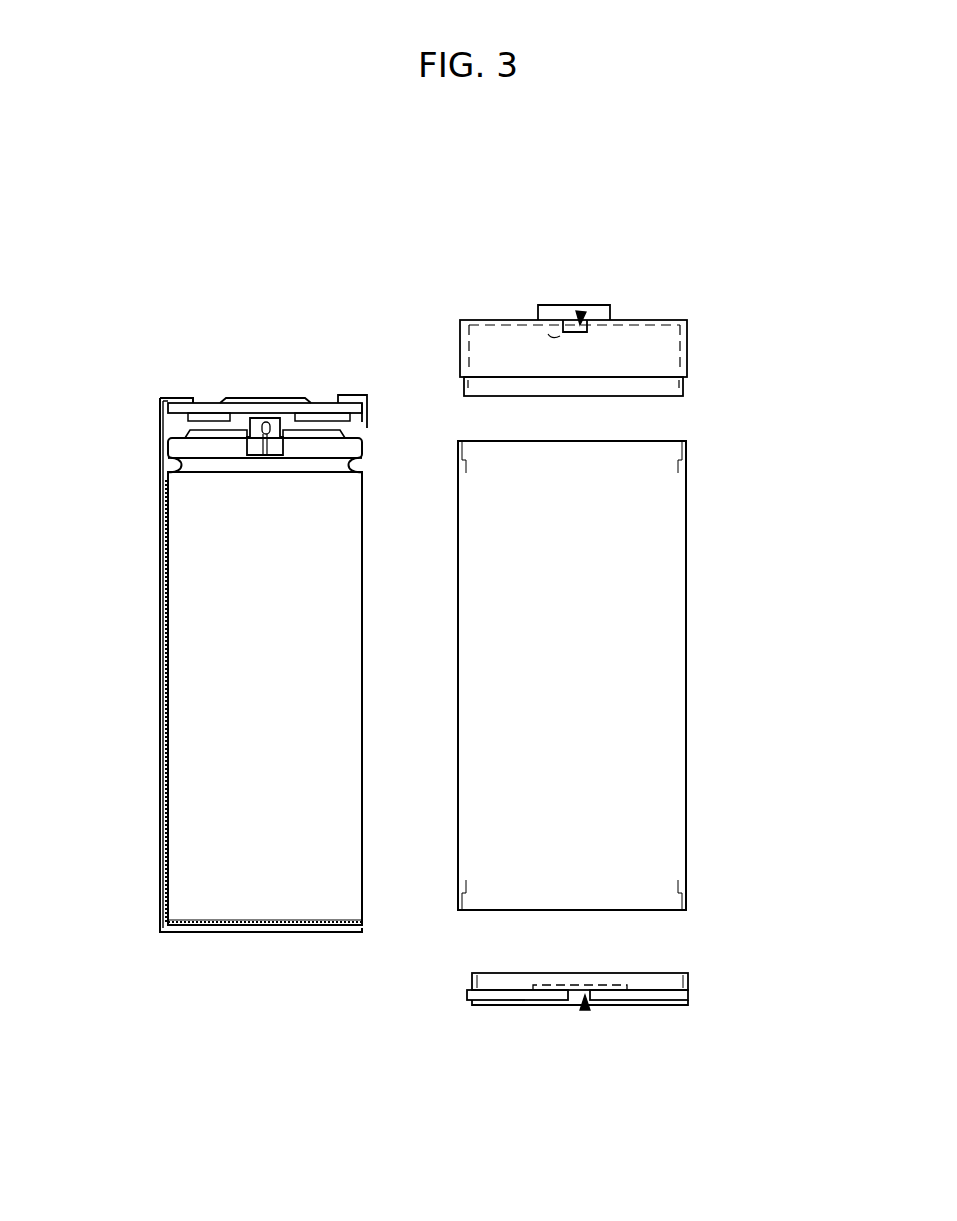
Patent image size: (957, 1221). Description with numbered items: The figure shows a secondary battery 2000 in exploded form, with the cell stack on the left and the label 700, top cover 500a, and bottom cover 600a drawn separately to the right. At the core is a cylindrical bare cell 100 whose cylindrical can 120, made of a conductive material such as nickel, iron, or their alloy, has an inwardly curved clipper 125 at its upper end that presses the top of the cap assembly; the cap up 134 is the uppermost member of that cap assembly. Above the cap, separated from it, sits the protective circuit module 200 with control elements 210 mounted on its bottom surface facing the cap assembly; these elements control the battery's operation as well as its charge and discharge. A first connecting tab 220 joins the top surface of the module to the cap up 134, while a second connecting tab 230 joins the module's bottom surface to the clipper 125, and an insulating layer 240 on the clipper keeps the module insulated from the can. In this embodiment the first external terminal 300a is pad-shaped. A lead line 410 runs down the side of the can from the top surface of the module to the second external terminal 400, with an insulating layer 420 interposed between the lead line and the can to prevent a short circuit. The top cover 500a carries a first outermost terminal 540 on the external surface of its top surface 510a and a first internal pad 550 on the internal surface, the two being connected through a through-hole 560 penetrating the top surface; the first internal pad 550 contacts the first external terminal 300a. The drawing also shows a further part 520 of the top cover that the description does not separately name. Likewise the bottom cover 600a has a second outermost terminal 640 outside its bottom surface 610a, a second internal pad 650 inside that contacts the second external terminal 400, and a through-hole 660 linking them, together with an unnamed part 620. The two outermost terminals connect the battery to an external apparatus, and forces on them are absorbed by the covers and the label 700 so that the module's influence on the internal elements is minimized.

The secondary battery 2000 is at (133, 246).
The cylindrical bare cell 100 is at (308, 668).
The cylindrical can 120 is at (363, 612).
The clipper 125 is at (363, 463).
The cap up 134 is at (208, 430).
The protective circuit module 200 is at (240, 398).
The control elements 210 is at (316, 410).
The first connecting tab 220 is at (353, 397).
The second connecting tab 230 is at (255, 415).
The insulating layer 240 is at (187, 438).
The first external terminal 300a is at (292, 399).
The second external terminal 400 is at (223, 697).
The lead line 410 is at (162, 705).
The insulating layer 420 is at (163, 773).
The top cover 500a is at (656, 324).
The top surface 510a is at (688, 320).
The upper cover rim 520 is at (688, 348).
The first outermost terminal 540 is at (560, 305).
The first internal pad 550 is at (562, 332).
The through-hole 560 is at (584, 310).
The bottom cover 600a is at (662, 1001).
The bottom surface 610a is at (690, 998).
The lower cover body 620 is at (690, 975).
The second outermost terminal 640 is at (517, 1002).
The second internal pad 650 is at (612, 983).
The through-hole 660 is at (585, 1010).
The label 700 is at (688, 612).